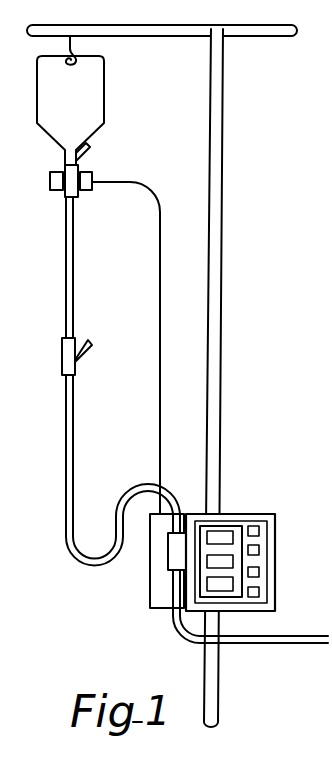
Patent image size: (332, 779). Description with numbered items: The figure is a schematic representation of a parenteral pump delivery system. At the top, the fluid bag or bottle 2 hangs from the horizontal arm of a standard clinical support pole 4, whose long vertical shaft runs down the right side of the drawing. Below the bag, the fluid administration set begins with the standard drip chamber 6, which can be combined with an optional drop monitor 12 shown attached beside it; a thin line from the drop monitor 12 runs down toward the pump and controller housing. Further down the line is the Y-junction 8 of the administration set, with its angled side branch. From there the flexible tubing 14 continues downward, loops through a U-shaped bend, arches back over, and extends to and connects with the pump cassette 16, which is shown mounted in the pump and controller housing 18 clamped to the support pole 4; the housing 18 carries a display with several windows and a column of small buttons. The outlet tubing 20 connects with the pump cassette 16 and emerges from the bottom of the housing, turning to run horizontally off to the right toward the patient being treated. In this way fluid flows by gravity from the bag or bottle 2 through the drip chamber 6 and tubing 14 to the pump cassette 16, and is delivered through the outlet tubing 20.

The fluid bag or bottle 2 is at (104, 99).
The clinical support pole 4 is at (223, 135).
The drip chamber 6 is at (62, 196).
The Y-junction 8 is at (62, 357).
The drop monitor 12 is at (90, 191).
The flexible tubing 14 is at (64, 543).
The pump cassette 16 is at (168, 556).
The pump and controller housing 18 is at (276, 555).
The outlet tubing 20 is at (284, 645).